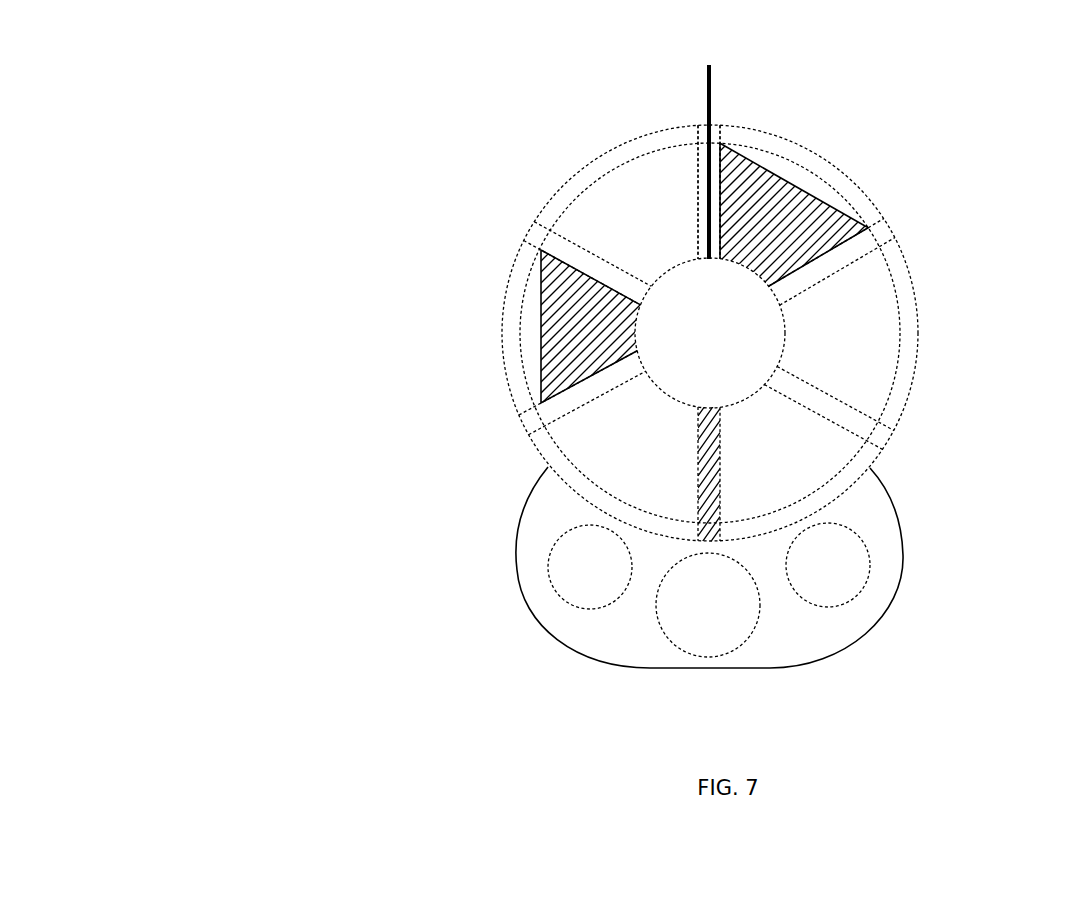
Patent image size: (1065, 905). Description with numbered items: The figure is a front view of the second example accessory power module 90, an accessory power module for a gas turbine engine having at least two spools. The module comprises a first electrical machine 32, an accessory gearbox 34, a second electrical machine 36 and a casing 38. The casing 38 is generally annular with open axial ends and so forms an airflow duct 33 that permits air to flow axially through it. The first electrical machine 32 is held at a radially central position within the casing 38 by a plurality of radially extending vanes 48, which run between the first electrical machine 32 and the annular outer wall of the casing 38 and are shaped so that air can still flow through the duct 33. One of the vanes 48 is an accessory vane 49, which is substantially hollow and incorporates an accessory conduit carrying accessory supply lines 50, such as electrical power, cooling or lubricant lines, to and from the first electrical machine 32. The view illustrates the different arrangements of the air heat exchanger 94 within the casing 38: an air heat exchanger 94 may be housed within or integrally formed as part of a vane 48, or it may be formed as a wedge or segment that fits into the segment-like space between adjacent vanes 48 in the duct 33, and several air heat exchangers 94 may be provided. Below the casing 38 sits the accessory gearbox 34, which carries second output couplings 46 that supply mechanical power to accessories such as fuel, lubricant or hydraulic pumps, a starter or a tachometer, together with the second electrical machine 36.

The second example accessory power module 90 is at (156, 130).
The accessory supply lines 50 is at (707, 95).
The accessory vane 49 is at (700, 157).
The air heat exchanger 94 is at (808, 200).
The vanes 48 is at (787, 300).
The casing 38 is at (920, 322).
The first electrical machine 32 is at (710, 333).
The airflow duct 33 is at (853, 283).
The accessory gearbox 34 is at (903, 517).
The second output couplings 46 is at (709, 566).
The second electrical machine 36 is at (708, 605).